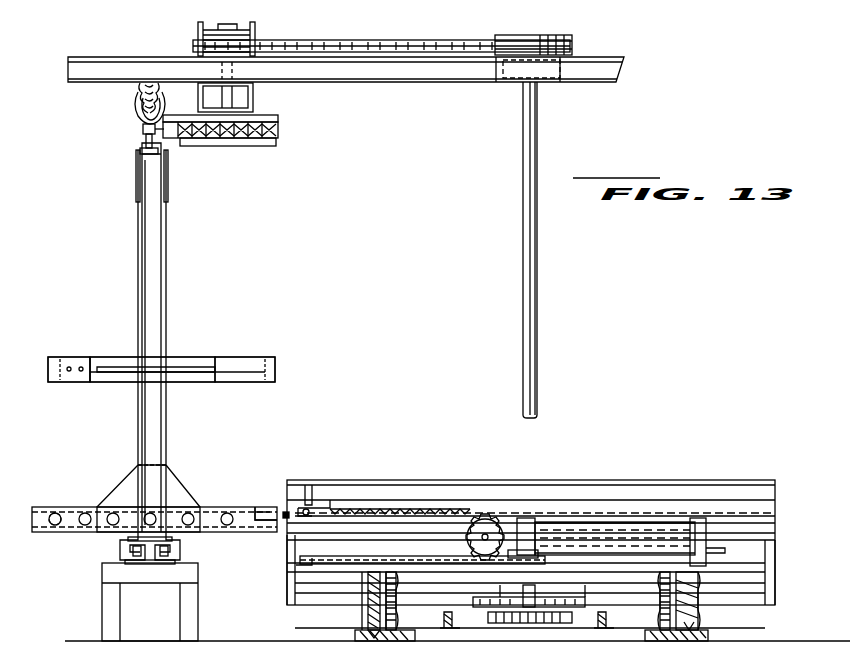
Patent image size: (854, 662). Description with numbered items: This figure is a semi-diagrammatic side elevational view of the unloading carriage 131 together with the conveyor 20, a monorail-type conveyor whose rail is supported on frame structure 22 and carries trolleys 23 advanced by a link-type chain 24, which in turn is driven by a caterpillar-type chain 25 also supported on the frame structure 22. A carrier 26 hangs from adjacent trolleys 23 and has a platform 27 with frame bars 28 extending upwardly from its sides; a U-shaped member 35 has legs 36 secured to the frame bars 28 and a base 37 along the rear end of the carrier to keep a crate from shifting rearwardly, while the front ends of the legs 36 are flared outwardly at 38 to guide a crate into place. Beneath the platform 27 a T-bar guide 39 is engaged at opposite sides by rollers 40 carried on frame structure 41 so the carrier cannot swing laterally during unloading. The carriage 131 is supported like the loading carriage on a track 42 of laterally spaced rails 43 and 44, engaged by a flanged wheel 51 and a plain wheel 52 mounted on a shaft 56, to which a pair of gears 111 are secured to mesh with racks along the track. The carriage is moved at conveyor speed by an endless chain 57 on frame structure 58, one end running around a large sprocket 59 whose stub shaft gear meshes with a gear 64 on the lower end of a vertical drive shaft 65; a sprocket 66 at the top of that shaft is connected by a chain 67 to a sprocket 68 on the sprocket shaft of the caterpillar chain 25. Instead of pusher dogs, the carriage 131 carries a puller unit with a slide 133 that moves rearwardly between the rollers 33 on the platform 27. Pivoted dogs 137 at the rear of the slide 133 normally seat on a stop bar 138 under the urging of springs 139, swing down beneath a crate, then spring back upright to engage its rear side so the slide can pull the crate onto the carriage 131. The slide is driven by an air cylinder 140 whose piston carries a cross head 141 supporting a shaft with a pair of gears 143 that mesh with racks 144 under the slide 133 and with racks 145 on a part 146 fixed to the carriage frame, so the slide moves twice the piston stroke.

The conveyor 20 is at (133, 98).
The frame structure 22 is at (415, 73).
The trolleys 23 is at (139, 115).
The link-type chain 24 is at (142, 135).
The caterpillar-type chain 25 is at (279, 131).
The carrier 26 is at (177, 225).
The platform 27 is at (56, 510).
The frame bars 28 is at (152, 314).
The rollers 33 is at (204, 503).
The U-shaped member 35 is at (94, 350).
The legs 36 is at (205, 357).
The base 37 is at (44, 362).
The flared front ends 38 is at (276, 369).
The T-bar guide 39 is at (122, 541).
The rollers 40 is at (162, 568).
The frame structure 41 is at (196, 616).
The track 42 is at (357, 613).
The rail 43 is at (372, 641).
The rail 44 is at (712, 633).
The flanged wheel 51 is at (368, 589).
The plain wheel 52 is at (700, 598).
The shaft 56 is at (586, 596).
The endless chain 57 is at (469, 603).
The frame structure 58 is at (604, 628).
The sprocket 59 is at (496, 589).
The gear 64 is at (556, 624).
The vertical drive shaft 65 is at (533, 270).
The sprocket 66 is at (572, 42).
The chain 67 is at (375, 46).
The sprocket 68 is at (256, 42).
The gears 111 is at (398, 582).
The unloading carriage 131 is at (421, 475).
The slide 133 is at (445, 511).
The dogs 137 is at (310, 484).
The stop bar 138 is at (284, 520).
The springs 139 is at (352, 508).
The air cylinder 140 is at (698, 520).
The cross head 141 is at (500, 520).
The gears 143 is at (466, 548).
The racks 144 is at (610, 521).
The racks 145 is at (368, 562).
The part 146 is at (302, 565).